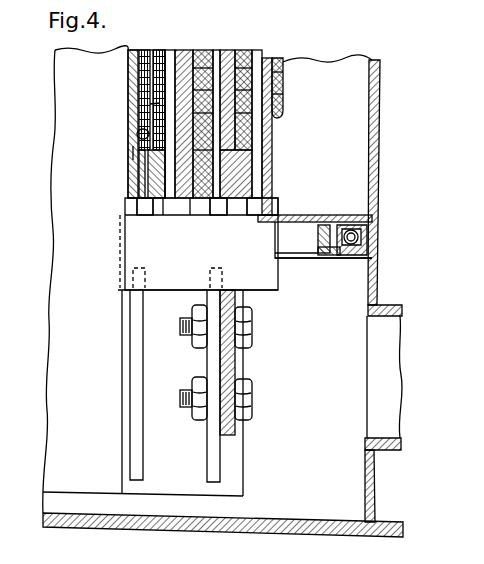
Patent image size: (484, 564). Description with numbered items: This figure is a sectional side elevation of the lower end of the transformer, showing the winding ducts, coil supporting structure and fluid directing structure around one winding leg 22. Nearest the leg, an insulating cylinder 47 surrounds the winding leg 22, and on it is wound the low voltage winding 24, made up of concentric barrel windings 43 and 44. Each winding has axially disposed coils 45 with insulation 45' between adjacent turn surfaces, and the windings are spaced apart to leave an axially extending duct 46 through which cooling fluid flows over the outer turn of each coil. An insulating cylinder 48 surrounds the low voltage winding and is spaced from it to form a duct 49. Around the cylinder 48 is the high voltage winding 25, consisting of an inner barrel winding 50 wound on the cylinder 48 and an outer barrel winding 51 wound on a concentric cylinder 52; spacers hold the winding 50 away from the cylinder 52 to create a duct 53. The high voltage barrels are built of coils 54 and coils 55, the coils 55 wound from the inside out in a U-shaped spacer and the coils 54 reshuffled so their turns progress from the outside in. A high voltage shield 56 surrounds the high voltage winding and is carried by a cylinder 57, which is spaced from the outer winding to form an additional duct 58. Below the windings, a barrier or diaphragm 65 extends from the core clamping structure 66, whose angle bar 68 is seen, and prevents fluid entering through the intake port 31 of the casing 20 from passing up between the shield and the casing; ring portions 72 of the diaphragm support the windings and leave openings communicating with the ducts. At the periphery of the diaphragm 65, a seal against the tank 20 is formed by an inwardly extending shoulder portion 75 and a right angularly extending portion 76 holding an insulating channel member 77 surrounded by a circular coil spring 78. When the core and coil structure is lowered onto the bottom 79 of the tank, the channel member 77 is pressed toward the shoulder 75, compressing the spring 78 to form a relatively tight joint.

The transformer casing 20 is at (376, 481).
The winding leg 22 is at (88, 198).
The low voltage winding 24 is at (160, 47).
The high voltage winding 25 is at (245, 47).
The intake port 31 is at (390, 375).
The barrel winding 43 is at (127, 97).
The barrel winding 44 is at (150, 104).
The coils 45 is at (106, 156).
The insulation 45' is at (116, 135).
The axially extending duct 46 is at (145, 207).
The insulating cylinder 47 is at (127, 68).
The insulating cylinder 48 is at (187, 58).
The duct 49 is at (170, 58).
The barrel winding 50 is at (208, 58).
The barrel winding 51 is at (265, 58).
The concentric cylinder 52 is at (217, 58).
The duct 53 is at (215, 198).
The coils 54 is at (273, 95).
The coils 55 is at (272, 132).
The high voltage shield 56 is at (283, 72).
The cylinder 57 is at (278, 62).
The duct 58 is at (257, 198).
The barrier 65 is at (318, 215).
The core clamping structure 66 is at (178, 468).
The angle bar 68 is at (240, 468).
The ring portions 72 is at (137, 207).
The shoulder portion 75 is at (350, 258).
The right angularly extending portion 76 is at (326, 243).
The channel member 77 is at (359, 245).
The coil spring 78 is at (358, 232).
The bottom 79 is at (338, 521).